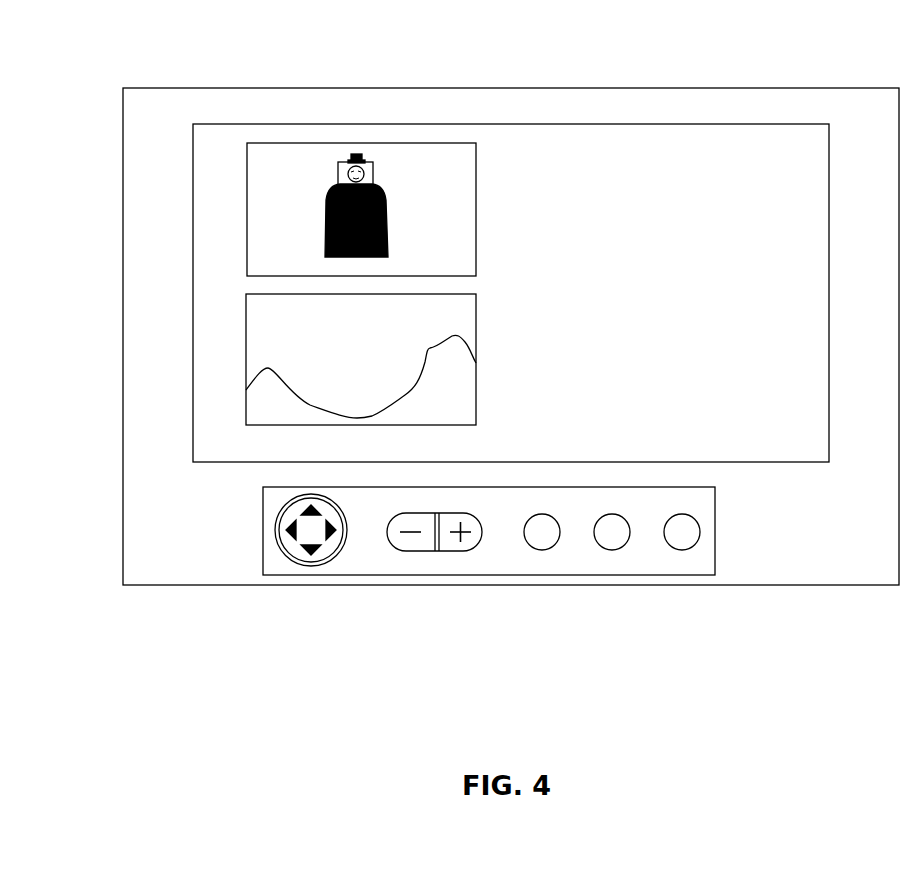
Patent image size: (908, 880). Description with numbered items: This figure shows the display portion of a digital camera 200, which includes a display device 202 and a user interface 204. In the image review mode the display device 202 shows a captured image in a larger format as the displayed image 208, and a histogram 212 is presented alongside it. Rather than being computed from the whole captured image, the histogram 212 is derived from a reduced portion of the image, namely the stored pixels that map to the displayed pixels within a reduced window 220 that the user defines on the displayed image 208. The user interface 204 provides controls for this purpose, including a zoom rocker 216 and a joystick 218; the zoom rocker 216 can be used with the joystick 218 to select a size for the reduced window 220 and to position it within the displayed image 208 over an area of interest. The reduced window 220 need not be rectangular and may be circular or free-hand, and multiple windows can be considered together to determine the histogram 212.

The digital camera 200 is at (287, 88).
The display device 202 is at (715, 124).
The user interface 204 is at (715, 531).
The displayed image 208 is at (413, 143).
The histogram 212 is at (246, 295).
The zoom rocker 216 is at (483, 532).
The joystick 218 is at (347, 530).
The reduced window 220 is at (378, 167).